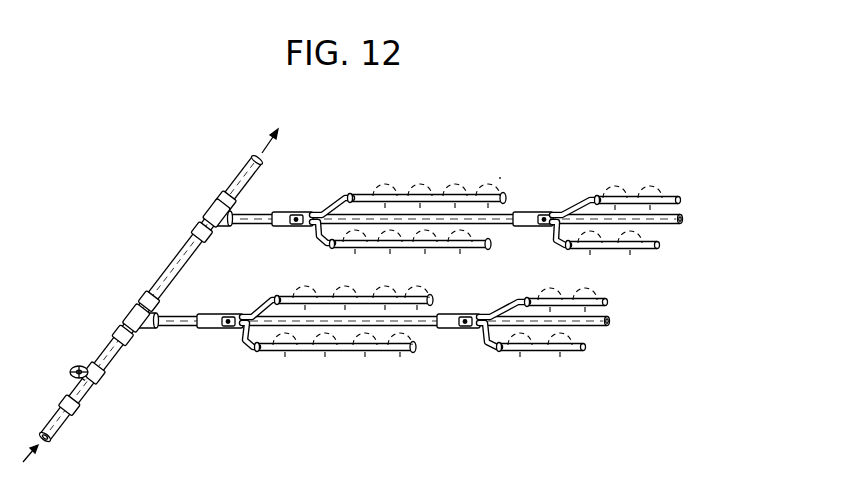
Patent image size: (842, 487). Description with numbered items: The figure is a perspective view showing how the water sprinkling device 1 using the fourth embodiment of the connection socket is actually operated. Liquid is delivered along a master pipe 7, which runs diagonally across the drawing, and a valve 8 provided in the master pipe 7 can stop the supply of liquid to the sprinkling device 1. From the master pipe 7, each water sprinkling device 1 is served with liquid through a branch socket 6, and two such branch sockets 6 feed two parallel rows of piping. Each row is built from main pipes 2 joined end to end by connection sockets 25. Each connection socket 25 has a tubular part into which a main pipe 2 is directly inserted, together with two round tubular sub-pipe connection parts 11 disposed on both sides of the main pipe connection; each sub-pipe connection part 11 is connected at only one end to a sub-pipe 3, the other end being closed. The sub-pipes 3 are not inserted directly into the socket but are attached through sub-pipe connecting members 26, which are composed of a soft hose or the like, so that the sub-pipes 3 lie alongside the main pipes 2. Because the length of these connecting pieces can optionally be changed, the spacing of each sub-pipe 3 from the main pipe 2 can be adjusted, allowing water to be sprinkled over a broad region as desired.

The water sprinkling device 1 is at (500, 176).
The main pipe 2 is at (485, 214).
The sub-pipe 3 is at (385, 192).
The branch socket 6 is at (212, 207).
The master pipe 7 is at (183, 248).
The valve 8 is at (99, 380).
The sub-pipe connection part 11 is at (284, 228).
The connection socket 25 is at (283, 212).
The sub-pipe connecting member 26 is at (336, 198).